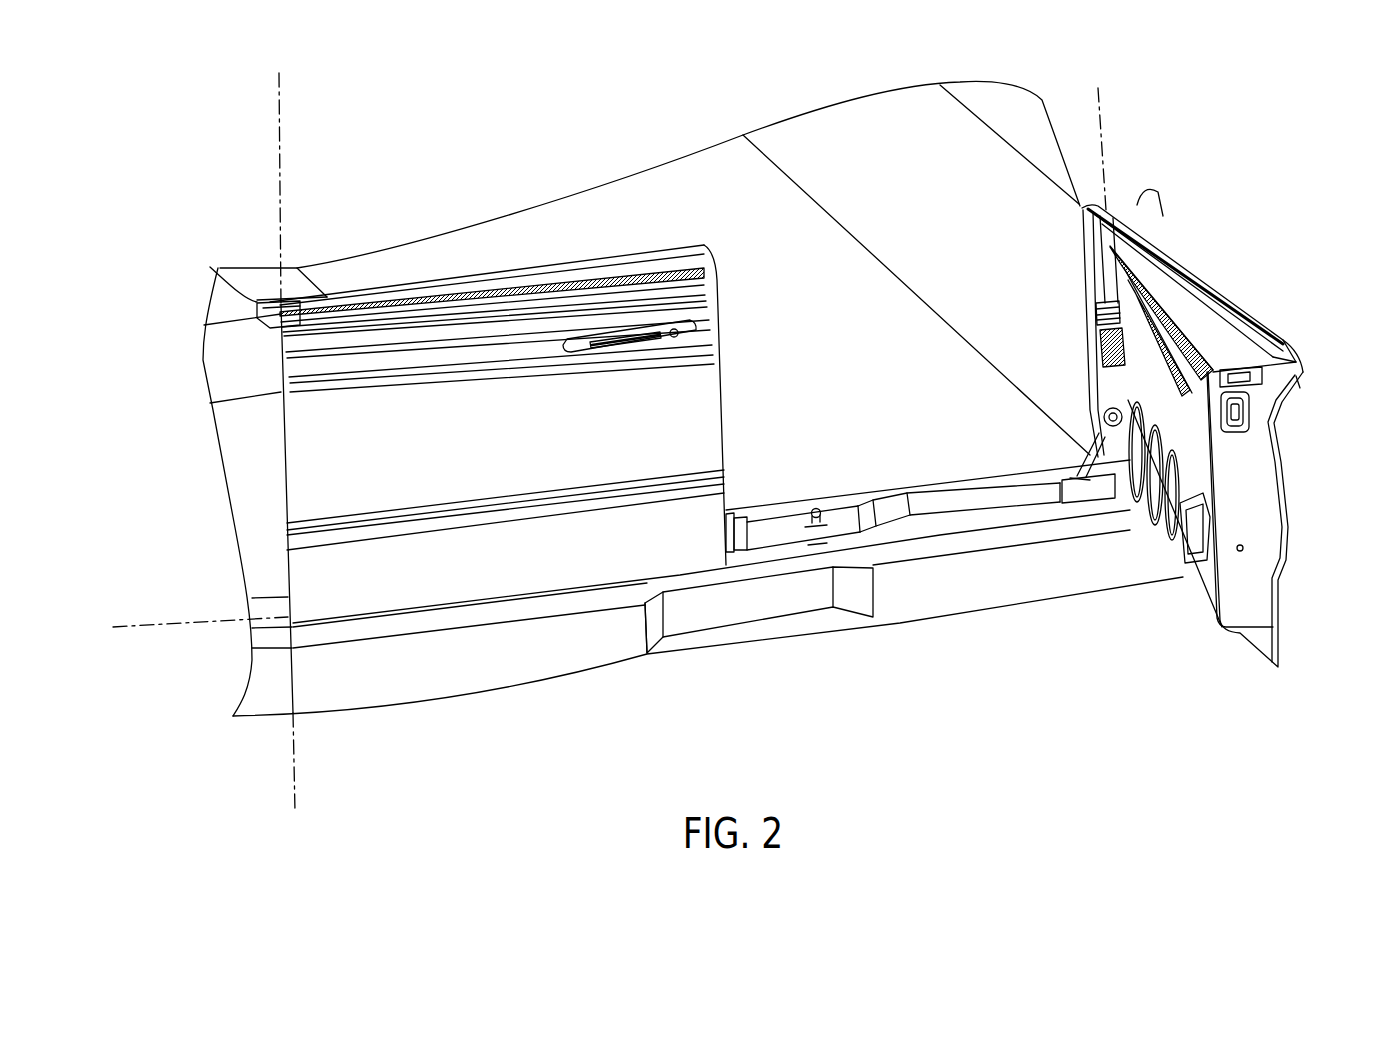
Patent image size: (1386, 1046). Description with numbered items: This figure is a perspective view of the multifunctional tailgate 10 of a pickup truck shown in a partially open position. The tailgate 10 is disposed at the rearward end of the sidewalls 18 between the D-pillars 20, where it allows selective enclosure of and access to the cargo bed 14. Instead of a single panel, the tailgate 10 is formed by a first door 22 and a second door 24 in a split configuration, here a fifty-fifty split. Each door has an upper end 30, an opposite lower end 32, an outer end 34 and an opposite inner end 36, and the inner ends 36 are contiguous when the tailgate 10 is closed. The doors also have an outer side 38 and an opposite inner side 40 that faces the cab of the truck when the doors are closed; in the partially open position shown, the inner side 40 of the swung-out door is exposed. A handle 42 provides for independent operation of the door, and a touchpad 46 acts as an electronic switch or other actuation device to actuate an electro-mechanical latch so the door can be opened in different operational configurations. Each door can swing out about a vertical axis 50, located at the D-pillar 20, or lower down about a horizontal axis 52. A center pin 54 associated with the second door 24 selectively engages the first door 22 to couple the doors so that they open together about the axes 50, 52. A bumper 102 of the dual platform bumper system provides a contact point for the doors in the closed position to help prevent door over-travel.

The multifunctional tailgate 10 is at (630, 694).
The cargo bed 14 is at (716, 206).
The sidewalls 18 is at (221, 266).
The D-pillars 20 is at (247, 303).
The first door 22 is at (411, 588).
The second door 24 is at (1304, 419).
The upper end 30 is at (480, 264).
The lower end 32 is at (487, 602).
The outer end 34 is at (282, 496).
The inner end 36 is at (722, 394).
The outer side 38 is at (417, 394).
The inner side 40 is at (1197, 542).
The handle 42 is at (622, 377).
The touchpad 46 is at (585, 372).
The vertical axis 50 is at (283, 106).
The horizontal axis 52 is at (141, 638).
The center pin 54 is at (1250, 424).
The bumper 102 is at (1255, 378).